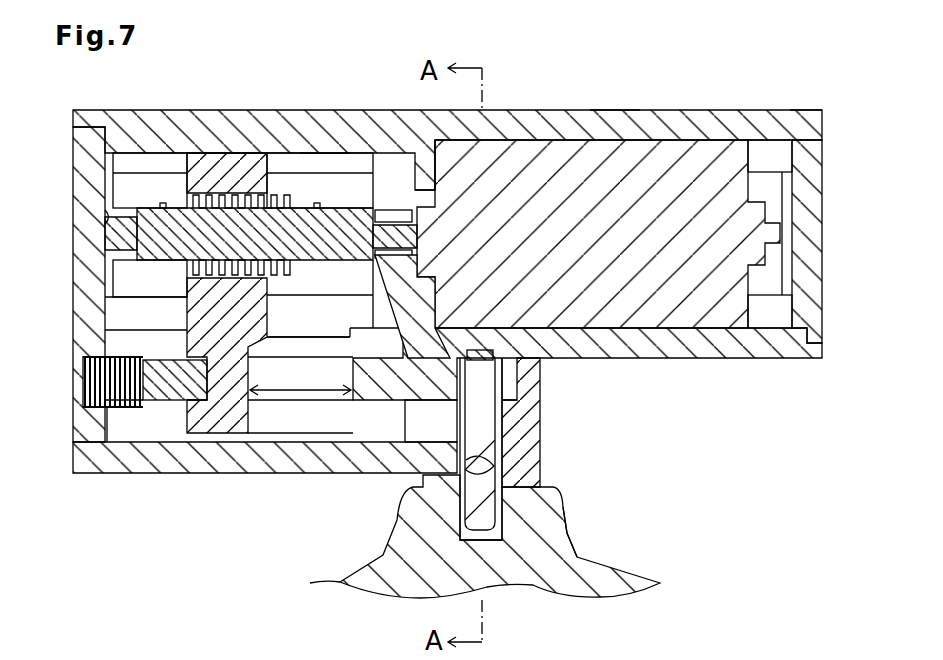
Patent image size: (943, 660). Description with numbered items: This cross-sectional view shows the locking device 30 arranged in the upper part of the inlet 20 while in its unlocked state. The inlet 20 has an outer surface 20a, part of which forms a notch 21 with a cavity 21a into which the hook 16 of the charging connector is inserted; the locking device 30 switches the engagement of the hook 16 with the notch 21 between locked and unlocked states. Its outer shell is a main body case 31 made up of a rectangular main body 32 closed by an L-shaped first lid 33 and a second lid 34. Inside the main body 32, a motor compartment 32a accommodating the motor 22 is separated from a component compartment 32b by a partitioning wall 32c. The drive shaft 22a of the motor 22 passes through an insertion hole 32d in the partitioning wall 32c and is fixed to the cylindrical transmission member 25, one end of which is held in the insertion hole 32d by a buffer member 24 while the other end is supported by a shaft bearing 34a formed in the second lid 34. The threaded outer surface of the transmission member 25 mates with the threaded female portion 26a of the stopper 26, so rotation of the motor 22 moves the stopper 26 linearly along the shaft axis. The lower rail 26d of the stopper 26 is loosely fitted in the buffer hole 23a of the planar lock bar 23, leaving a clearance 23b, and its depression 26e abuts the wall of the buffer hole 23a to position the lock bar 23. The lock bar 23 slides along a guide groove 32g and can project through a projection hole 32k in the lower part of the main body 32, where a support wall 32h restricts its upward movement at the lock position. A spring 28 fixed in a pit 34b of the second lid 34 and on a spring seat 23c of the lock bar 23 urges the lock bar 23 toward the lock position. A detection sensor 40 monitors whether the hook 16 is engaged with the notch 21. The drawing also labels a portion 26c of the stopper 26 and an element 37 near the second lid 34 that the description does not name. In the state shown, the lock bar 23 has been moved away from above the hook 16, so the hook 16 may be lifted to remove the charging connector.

The hook 16 is at (515, 407).
The inlet 20 is at (654, 510).
The outer surface 20a is at (577, 537).
The notch 21 is at (527, 433).
The cavity 21a is at (530, 467).
The motor 22 is at (757, 147).
The drive shaft 22a is at (385, 210).
The lock bar 23 is at (388, 407).
The buffer hole 23a is at (345, 378).
The clearance 23b is at (278, 380).
The spring seat 23c is at (85, 387).
The buffer member 24 is at (265, 255).
The transmission member 25 is at (350, 200).
The stopper 26 is at (270, 312).
The threaded female portion 26a is at (195, 270).
The nut upper flange 26c is at (258, 153).
The lower rail 26d is at (257, 432).
The depression 26e is at (190, 405).
The spring 28 is at (107, 417).
The locking device 30 is at (807, 105).
The main body case 31 is at (672, 112).
The main body 32 is at (522, 110).
The motor compartment 32a is at (605, 125).
The component compartment 32b is at (325, 150).
The partitioning wall 32c is at (437, 176).
The insertion hole 32d is at (420, 230).
The guide groove 32g is at (586, 364).
The support wall 32h is at (517, 370).
The projection hole 32k is at (431, 423).
The first lid 33 is at (824, 220).
The second lid 34 is at (73, 178).
The shaft bearing 34a is at (105, 232).
The pit 34b is at (100, 355).
The bearing 37 is at (130, 173).
The detection sensor 40 is at (476, 350).